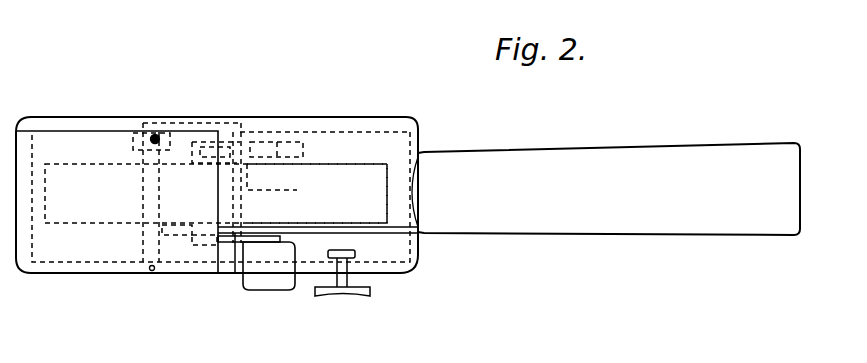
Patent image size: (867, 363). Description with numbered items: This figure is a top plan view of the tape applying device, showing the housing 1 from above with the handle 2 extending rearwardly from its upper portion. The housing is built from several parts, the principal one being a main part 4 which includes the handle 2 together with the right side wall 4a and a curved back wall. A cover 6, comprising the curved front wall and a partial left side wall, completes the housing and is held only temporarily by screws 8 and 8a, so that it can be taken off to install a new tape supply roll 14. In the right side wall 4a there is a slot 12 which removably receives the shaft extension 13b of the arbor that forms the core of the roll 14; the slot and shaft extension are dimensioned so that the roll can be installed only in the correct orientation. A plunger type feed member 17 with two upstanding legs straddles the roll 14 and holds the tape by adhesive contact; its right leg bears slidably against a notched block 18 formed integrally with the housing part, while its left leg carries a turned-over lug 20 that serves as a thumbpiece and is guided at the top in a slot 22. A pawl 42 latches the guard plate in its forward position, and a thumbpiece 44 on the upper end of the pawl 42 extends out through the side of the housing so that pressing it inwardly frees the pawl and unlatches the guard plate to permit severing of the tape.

The housing 1 is at (343, 113).
The handle 2 is at (617, 155).
The main part 4 is at (381, 137).
The right side wall 4a is at (56, 119).
The cover 6 is at (70, 252).
The screw 8 is at (142, 229).
The screw 8a is at (156, 138).
The slot 12 is at (190, 120).
The shaft extension 13b is at (249, 133).
The tape supply roll 14 is at (97, 165).
The feed member 17 is at (317, 193).
The notched block 18 is at (301, 139).
The lug 20 is at (270, 279).
The slot 22 is at (231, 250).
The pawl 42 is at (356, 254).
The thumbpiece 44 is at (363, 297).